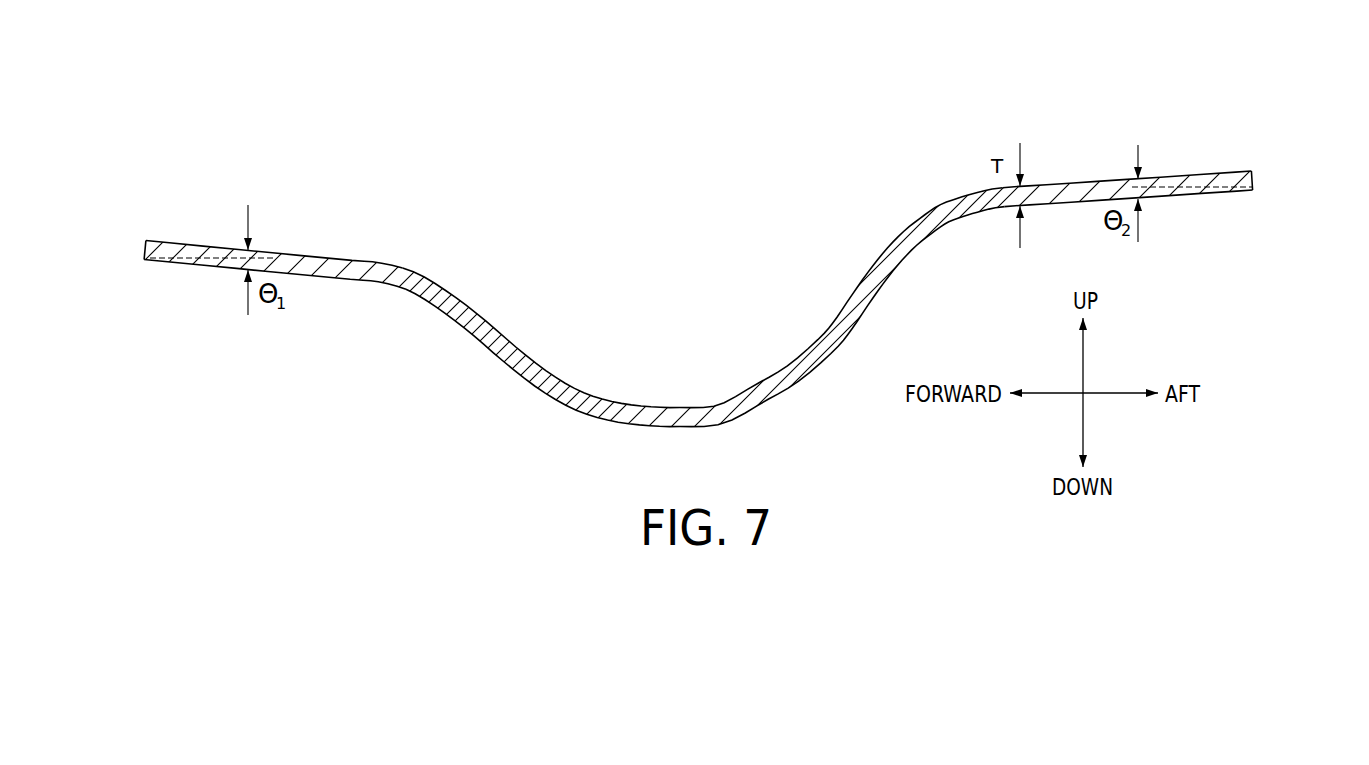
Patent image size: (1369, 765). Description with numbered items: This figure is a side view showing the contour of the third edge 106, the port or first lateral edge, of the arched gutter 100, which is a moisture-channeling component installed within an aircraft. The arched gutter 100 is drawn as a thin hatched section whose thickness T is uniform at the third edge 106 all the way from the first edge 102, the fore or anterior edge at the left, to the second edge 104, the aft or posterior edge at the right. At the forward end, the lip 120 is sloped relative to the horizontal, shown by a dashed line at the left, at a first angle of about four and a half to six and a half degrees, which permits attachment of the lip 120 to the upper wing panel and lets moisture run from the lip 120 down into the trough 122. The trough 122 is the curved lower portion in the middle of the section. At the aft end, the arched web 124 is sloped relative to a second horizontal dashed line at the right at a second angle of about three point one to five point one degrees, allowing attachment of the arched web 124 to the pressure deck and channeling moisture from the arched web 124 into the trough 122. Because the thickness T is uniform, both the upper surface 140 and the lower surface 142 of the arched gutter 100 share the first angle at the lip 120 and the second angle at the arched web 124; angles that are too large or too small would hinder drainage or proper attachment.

The arched gutter 100 is at (175, 138).
The first edge 102 is at (143, 250).
The second edge 104 is at (1255, 182).
The third edge 106 is at (453, 310).
The lip 120 is at (292, 206).
The trough 122 is at (673, 350).
The arched web 124 is at (1250, 150).
The upper surface 140 is at (345, 257).
The lower surface 142 is at (365, 282).